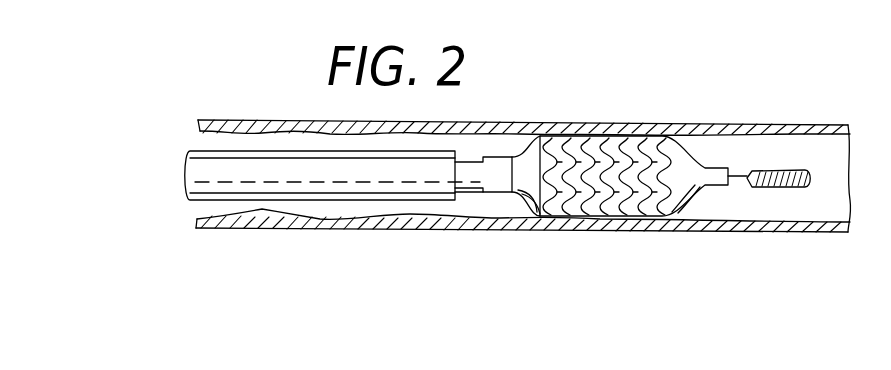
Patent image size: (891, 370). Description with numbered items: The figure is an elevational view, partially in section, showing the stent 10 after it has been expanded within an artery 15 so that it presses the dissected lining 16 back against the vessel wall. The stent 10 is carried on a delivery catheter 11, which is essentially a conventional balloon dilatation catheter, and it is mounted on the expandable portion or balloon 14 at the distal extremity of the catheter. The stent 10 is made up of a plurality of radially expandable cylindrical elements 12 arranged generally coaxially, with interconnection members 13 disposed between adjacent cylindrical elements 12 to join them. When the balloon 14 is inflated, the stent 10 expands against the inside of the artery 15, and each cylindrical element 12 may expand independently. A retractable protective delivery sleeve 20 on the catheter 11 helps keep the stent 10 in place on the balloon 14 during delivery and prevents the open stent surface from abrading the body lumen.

The stent 10 is at (676, 168).
The delivery catheter 11 is at (474, 170).
The radially expandable cylindrical elements 12 is at (637, 228).
The interconnection members 13 is at (587, 214).
The balloon 14 is at (535, 188).
The artery 15 is at (732, 218).
The dissected lining 16 is at (603, 137).
The retractable protective delivery sleeve 20 is at (342, 177).